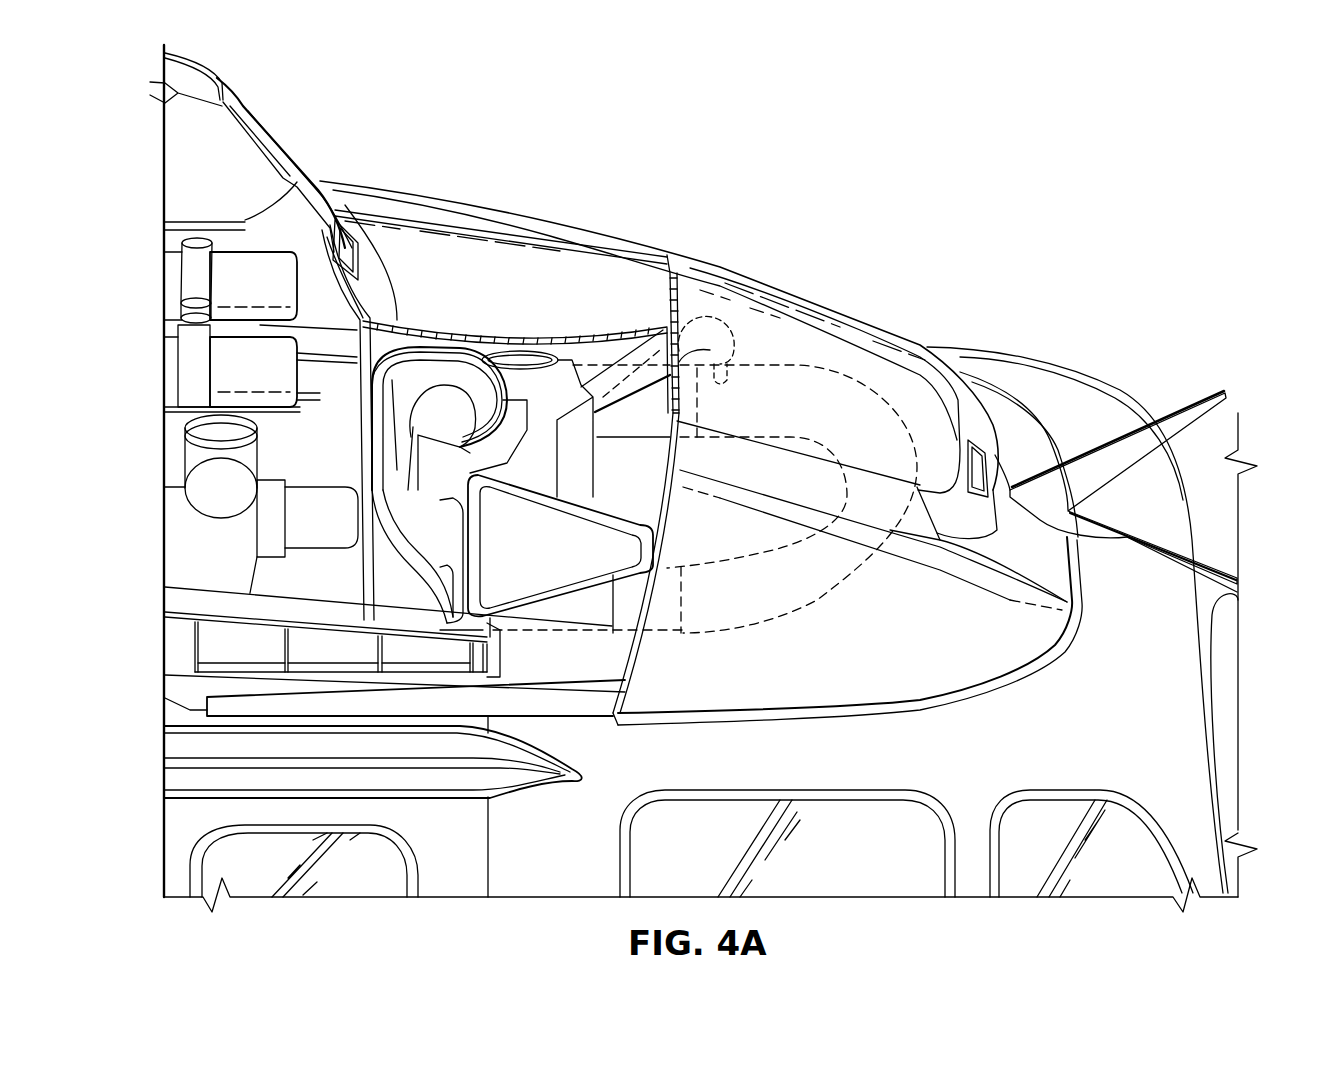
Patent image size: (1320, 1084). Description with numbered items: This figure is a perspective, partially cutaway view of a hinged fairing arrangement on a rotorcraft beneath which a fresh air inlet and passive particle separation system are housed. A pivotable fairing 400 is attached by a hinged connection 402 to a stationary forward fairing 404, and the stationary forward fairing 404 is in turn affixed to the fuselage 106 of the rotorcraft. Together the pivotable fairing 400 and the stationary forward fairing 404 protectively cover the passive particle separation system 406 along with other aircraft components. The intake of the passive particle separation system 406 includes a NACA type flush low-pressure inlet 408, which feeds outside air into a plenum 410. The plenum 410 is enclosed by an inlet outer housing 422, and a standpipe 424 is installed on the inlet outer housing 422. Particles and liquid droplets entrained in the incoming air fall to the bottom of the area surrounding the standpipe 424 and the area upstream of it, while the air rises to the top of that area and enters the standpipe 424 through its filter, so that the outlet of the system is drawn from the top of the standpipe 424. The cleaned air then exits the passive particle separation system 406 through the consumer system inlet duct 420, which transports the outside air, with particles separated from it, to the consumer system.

The fuselage 106 is at (1073, 363).
The pivotable fairing 400 is at (580, 287).
The hinged connection 402 is at (680, 297).
The stationary forward fairing 404 is at (852, 323).
The passive particle separation system 406 is at (476, 272).
The NACA type flush low-pressure inlet 408 is at (620, 550).
The plenum 410 is at (417, 365).
The inlet duct 420 is at (790, 607).
The inlet outer housing 422 is at (372, 421).
The standpipe 424 is at (443, 400).